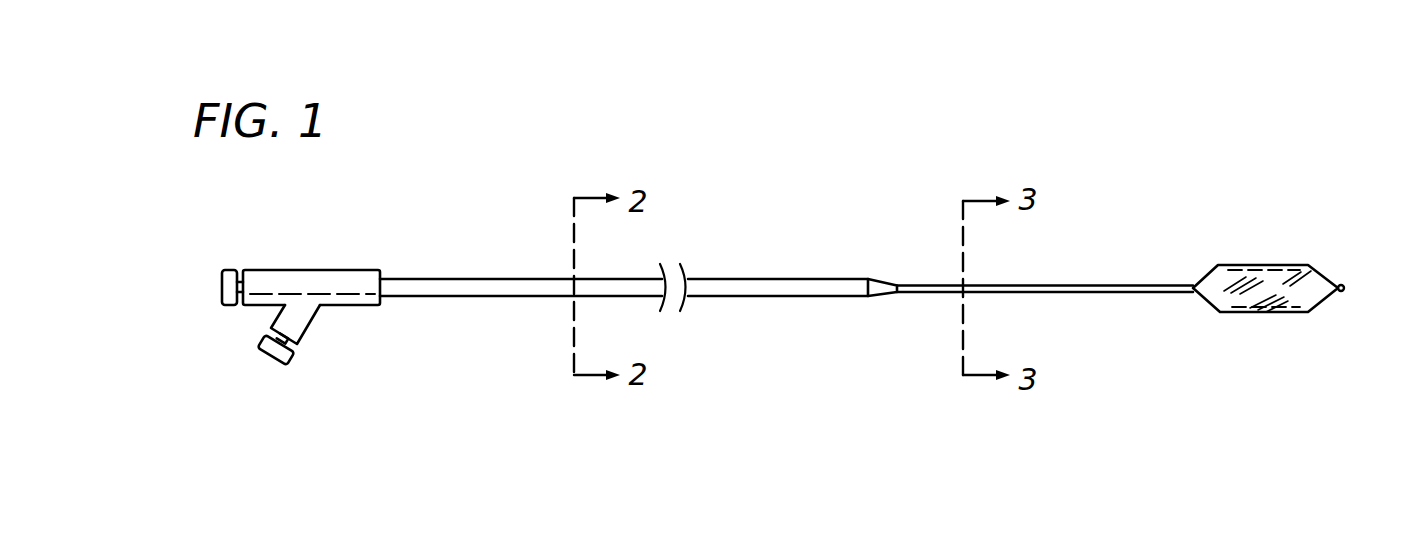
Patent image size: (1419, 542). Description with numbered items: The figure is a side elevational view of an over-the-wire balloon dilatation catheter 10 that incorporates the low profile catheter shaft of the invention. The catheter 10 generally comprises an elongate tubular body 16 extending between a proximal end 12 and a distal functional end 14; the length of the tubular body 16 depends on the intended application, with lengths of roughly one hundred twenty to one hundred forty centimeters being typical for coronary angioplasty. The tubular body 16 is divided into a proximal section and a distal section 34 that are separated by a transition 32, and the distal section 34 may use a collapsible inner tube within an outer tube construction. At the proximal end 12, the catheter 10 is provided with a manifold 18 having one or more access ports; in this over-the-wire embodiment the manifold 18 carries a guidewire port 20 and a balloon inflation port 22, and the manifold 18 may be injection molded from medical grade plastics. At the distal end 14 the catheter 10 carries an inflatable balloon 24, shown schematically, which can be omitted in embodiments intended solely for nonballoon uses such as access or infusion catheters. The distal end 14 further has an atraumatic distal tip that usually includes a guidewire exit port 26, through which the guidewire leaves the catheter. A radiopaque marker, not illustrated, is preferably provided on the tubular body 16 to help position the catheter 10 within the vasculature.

The catheter 10 is at (834, 136).
The proximal end 12 is at (246, 254).
The distal functional end 14 is at (1300, 246).
The elongate tubular body 16 is at (472, 296).
The manifold 18 is at (345, 277).
The guidewire port 20 is at (222, 292).
The balloon inflation port 22 is at (268, 358).
The inflatable balloon 24 is at (1280, 314).
The guidewire exit port 26 is at (1345, 291).
The transition 32 is at (883, 296).
The distal section 34 is at (1104, 307).